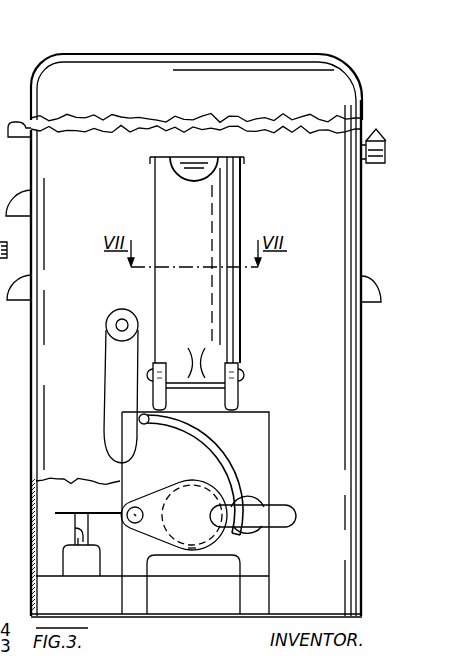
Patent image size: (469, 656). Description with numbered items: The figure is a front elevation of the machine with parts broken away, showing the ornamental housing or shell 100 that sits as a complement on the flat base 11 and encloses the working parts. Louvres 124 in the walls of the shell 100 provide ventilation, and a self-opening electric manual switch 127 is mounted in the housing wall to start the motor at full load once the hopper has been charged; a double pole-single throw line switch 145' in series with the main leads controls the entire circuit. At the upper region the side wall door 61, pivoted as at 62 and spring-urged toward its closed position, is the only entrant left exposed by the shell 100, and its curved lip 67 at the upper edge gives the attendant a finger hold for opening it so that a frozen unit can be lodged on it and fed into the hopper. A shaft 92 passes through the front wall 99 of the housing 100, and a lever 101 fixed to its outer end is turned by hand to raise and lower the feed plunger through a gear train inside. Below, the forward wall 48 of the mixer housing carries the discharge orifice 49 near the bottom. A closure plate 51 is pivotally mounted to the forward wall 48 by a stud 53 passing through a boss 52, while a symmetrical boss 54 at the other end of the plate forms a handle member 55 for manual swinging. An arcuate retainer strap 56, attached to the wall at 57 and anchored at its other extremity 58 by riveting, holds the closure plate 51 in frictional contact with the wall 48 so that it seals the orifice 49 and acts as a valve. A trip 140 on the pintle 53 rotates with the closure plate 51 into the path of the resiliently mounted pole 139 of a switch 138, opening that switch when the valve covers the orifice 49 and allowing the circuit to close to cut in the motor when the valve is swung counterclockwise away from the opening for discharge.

The housing 100 is at (282, 55).
The front wall 99 is at (58, 374).
The louvres 124 is at (25, 203).
The electric manual switch 127 is at (7, 252).
The double pole-single throw line switch 145' is at (385, 118).
The side wall door 61 is at (222, 201).
The curved lip 67 is at (193, 173).
The door pivot 62 is at (240, 378).
The lever 101 is at (117, 398).
The shaft 92 is at (114, 327).
The forward wall 48 is at (262, 580).
The base 11 is at (163, 578).
The retainer strap extremity 58 is at (140, 423).
The arcuate retainer strap 56 is at (193, 441).
The discharge orifice 49 is at (197, 487).
The boss 52 is at (149, 506).
The stud 53 is at (135, 524).
The boss 54 is at (245, 500).
The handle member 55 is at (288, 514).
The strap attachment 57 is at (242, 542).
The closure plate 51 is at (192, 550).
The trip 140 is at (105, 513).
The resiliently mounted pole 139 is at (75, 530).
The switch 138 is at (80, 555).